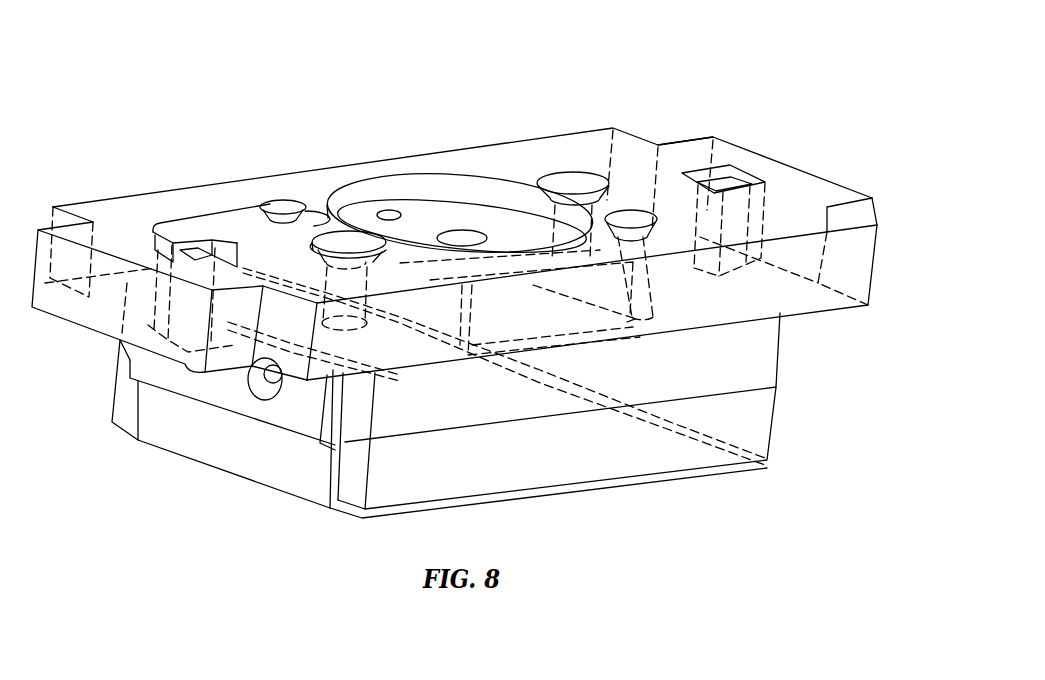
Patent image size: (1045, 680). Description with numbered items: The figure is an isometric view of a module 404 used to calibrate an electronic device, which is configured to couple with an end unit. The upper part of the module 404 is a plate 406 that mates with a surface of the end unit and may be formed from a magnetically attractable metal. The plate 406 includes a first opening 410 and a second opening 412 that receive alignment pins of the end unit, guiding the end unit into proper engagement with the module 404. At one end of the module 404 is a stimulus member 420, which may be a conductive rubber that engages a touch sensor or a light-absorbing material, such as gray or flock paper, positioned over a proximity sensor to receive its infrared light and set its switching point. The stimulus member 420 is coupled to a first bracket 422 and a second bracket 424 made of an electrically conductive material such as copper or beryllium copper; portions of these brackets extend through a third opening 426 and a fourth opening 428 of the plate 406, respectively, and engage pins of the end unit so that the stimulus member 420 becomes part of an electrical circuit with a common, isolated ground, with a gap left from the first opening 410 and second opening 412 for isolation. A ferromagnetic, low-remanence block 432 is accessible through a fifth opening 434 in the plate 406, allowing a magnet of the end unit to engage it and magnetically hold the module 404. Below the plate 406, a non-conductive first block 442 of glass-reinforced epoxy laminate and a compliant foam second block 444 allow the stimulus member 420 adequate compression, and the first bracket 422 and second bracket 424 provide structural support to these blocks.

The module 404 is at (845, 89).
The plate 406 is at (454, 252).
The first opening 410 is at (316, 216).
The second opening 412 is at (535, 163).
The stimulus member 420 is at (497, 425).
The first bracket 422 is at (252, 422).
The second bracket 424 is at (730, 180).
The third opening 426 is at (240, 202).
The fourth opening 428 is at (690, 153).
The block 432 is at (445, 212).
The fifth opening 434 is at (363, 152).
The first block 442 is at (780, 350).
The second block 444 is at (770, 424).